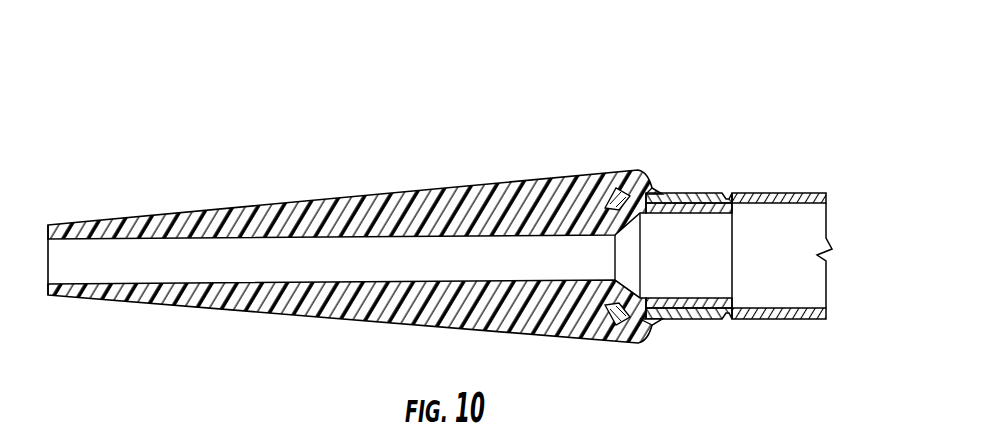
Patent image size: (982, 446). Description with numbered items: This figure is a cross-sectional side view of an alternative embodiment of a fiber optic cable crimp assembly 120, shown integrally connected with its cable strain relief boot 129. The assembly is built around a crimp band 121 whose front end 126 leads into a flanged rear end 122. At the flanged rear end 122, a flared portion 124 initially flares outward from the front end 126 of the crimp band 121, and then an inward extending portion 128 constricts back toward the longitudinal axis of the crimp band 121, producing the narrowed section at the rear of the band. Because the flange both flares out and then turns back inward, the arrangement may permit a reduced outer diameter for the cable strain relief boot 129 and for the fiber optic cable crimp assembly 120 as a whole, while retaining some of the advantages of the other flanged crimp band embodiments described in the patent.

The fiber optic cable crimp assembly 120 is at (495, 110).
The crimp band 121 is at (757, 193).
The flanged rear end 122 is at (652, 190).
The flared portion 124 is at (657, 321).
The front end 126 is at (810, 193).
The inward extending portion 128 is at (601, 345).
The cable strain relief boot 129 is at (318, 200).